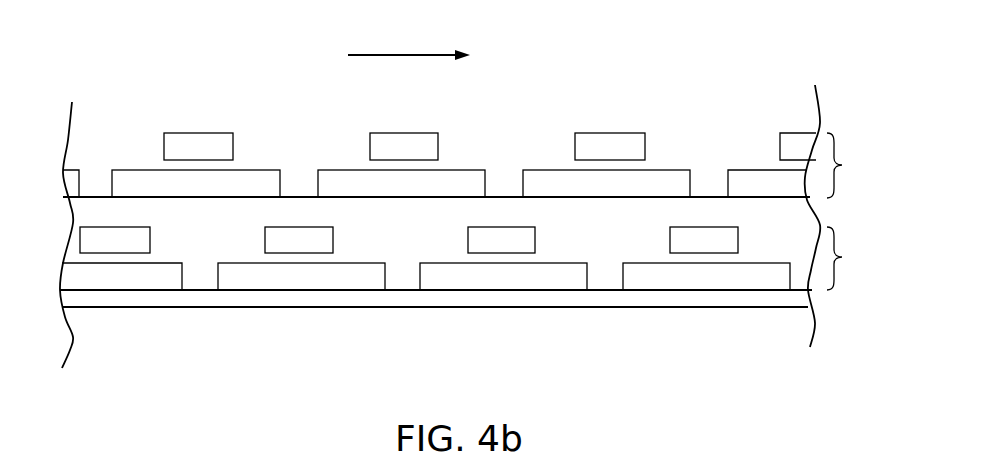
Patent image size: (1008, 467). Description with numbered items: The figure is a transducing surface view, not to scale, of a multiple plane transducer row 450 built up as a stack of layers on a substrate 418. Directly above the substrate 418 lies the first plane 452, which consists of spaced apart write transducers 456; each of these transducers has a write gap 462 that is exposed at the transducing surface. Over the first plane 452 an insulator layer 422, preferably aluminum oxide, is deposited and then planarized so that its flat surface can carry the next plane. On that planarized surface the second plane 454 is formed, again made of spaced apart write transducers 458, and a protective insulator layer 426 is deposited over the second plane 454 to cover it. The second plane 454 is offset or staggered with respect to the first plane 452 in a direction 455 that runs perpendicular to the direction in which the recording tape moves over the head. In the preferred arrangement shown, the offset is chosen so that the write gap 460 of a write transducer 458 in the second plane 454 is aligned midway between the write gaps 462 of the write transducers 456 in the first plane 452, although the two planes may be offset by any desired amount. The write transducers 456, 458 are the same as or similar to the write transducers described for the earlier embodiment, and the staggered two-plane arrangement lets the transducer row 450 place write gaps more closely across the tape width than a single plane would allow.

The substrate 418 is at (798, 325).
The insulator layer 422 is at (793, 212).
The protective insulator layer 426 is at (798, 112).
The multiple plane transducer row 450 is at (644, 340).
The first plane 452 is at (475, 258).
The second plane 454 is at (858, 165).
The direction 455 is at (402, 55).
The write transducers 456 is at (457, 283).
The write transducers 458 is at (207, 133).
The write gap 460 is at (228, 168).
The write gaps 462 is at (332, 258).